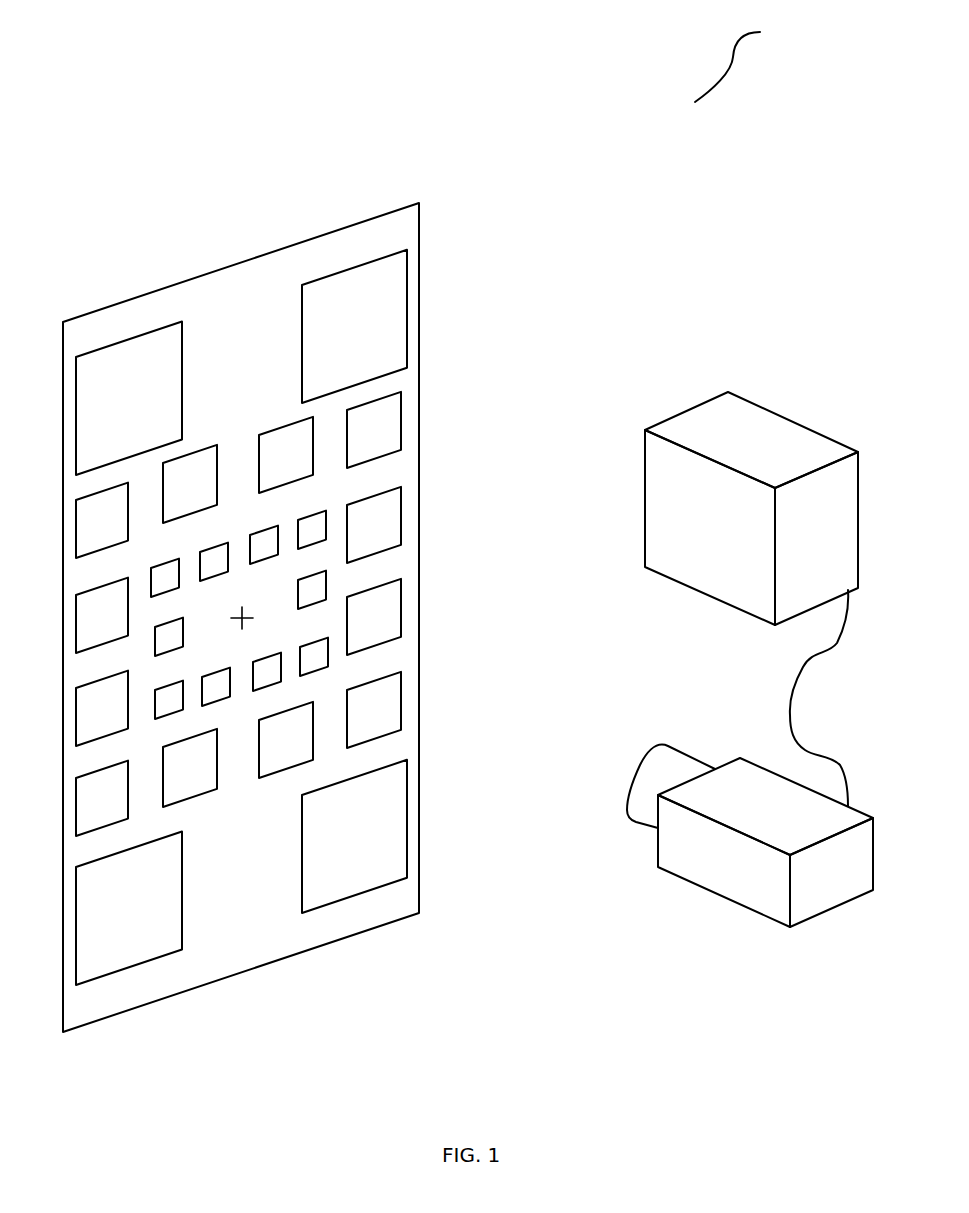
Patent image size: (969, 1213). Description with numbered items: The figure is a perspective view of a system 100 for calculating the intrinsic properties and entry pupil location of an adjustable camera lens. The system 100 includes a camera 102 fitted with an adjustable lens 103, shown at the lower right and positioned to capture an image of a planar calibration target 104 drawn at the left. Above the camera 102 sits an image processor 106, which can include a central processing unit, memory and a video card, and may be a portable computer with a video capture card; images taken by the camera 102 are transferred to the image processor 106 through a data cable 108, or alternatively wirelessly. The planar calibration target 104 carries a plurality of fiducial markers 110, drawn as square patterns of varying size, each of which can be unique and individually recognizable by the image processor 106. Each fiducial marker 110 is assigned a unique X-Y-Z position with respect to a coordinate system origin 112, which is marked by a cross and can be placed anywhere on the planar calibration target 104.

The system 100 is at (763, 56).
The camera 102 is at (760, 915).
The adjustable lens 103 is at (660, 745).
The planar calibration target 104 is at (205, 274).
The image processor 106 is at (670, 415).
The data cable 108 is at (788, 710).
The fiducial marker 110 is at (325, 513).
The coordinate system origin 112 is at (245, 620).